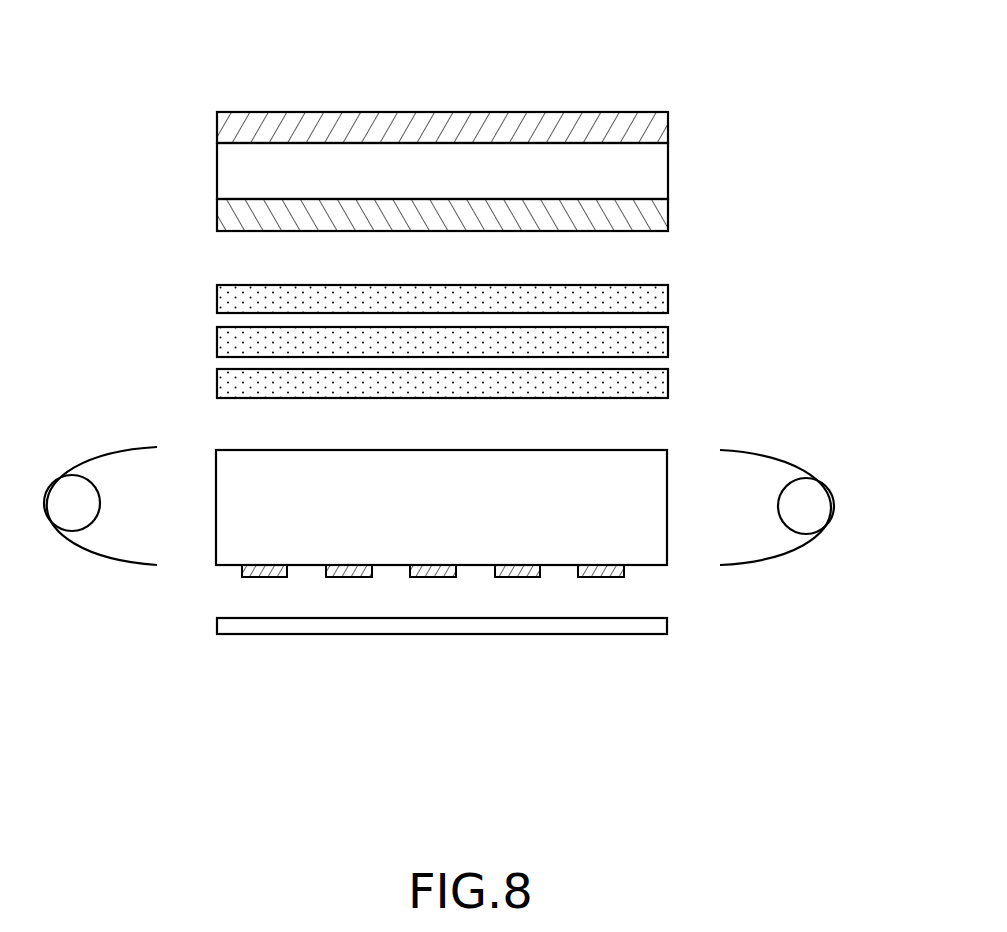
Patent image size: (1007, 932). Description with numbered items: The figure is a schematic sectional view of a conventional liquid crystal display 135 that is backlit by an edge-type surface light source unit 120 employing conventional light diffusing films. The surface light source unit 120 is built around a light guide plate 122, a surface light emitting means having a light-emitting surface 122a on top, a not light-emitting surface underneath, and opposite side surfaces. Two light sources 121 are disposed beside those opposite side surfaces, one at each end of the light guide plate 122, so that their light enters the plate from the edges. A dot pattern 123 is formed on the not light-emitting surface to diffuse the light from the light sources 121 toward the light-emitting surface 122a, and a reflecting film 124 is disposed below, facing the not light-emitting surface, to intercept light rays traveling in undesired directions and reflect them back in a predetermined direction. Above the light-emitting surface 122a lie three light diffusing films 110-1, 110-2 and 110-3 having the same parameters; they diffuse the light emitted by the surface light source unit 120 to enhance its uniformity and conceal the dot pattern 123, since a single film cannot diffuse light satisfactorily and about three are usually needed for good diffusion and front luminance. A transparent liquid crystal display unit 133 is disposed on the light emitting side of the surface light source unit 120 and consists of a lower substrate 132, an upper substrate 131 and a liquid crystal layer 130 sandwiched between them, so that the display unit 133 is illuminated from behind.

The liquid crystal display 135 is at (626, 64).
The liquid crystal display unit 133 is at (524, 170).
The upper substrate 131 is at (668, 128).
The liquid crystal layer 130 is at (662, 173).
The lower substrate 132 is at (484, 215).
The light diffusing film 110-1 is at (660, 300).
The light diffusing film 110-2 is at (660, 343).
The light diffusing film 110-3 is at (660, 386).
The surface light source unit 120 is at (475, 495).
The light source 121 is at (70, 515).
The light guide plate 122 is at (232, 552).
The light-emitting surface 122a is at (285, 450).
The dot pattern 123 is at (347, 577).
The reflecting film 124 is at (448, 626).